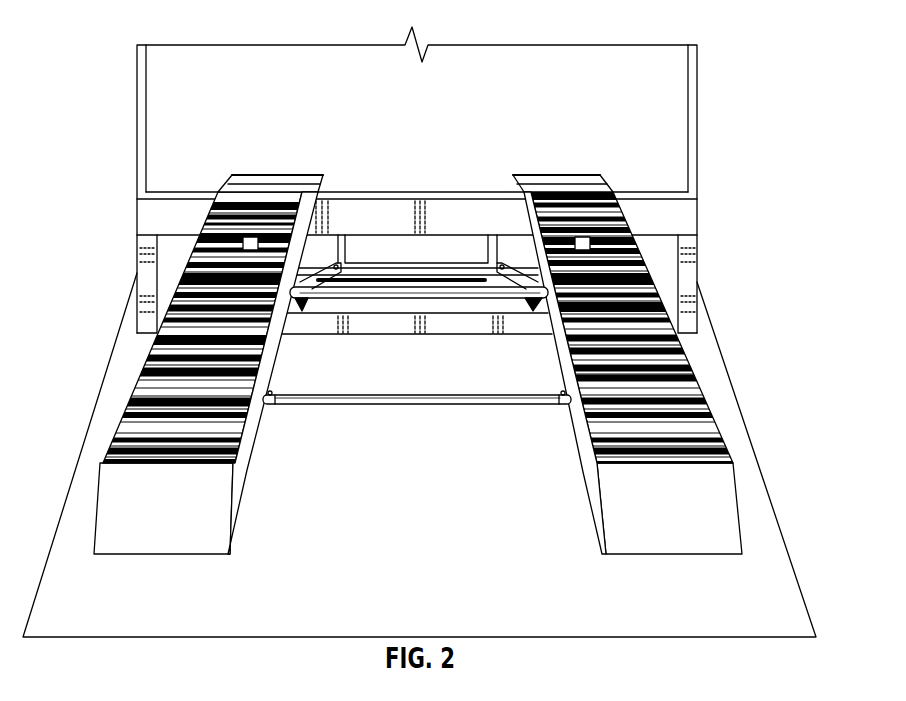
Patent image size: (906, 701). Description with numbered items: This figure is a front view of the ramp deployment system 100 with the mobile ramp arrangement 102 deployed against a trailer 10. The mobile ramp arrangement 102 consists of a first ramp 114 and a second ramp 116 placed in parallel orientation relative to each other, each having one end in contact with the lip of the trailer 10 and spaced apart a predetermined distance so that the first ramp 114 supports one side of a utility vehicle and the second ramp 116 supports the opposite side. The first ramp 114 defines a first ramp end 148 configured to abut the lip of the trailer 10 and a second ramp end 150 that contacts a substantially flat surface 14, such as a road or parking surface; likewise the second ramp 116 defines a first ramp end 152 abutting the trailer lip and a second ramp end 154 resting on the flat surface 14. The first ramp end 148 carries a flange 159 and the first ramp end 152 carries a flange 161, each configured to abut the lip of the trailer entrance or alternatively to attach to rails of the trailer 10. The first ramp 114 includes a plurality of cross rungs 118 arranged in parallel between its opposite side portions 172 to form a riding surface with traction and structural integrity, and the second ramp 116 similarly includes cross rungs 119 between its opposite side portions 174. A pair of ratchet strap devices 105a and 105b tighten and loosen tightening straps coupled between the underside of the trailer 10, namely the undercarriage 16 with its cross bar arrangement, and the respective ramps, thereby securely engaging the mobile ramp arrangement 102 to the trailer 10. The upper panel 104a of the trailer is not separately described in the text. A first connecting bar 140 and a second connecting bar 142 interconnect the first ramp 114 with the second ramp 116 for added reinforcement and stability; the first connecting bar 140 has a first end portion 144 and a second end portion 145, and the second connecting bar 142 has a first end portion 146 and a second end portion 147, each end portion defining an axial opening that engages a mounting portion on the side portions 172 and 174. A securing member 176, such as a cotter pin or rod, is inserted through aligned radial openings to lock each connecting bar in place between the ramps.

The trailer 10 is at (724, 99).
The substantially flat surface 14 is at (418, 548).
The undercarriage 16 is at (373, 262).
The ramp deployment system 100 is at (93, 393).
The mobile ramp arrangement 102 is at (772, 465).
The upper panel 104a is at (206, 147).
The ratchet strap device 105a is at (190, 243).
The ratchet strap device 105b is at (642, 245).
The first ramp 114 is at (188, 373).
The second ramp 116 is at (655, 368).
The cross rungs 118 is at (123, 407).
The cross rungs 119 is at (705, 397).
The first connecting bar 140 is at (427, 293).
The second connecting bar 142 is at (422, 405).
The first end portion 144 is at (325, 297).
The second end portion 145 is at (530, 307).
The first end portion 146 is at (282, 404).
The second end portion 147 is at (562, 407).
The first ramp end 148 is at (262, 187).
The second ramp end 150 is at (175, 543).
The first ramp end 152 is at (576, 187).
The second ramp end 154 is at (686, 535).
The flange 159 is at (309, 175).
The flange 161 is at (536, 173).
The side portions 172 is at (143, 365).
The side portions 174 is at (703, 392).
The securing member 176 is at (333, 263).